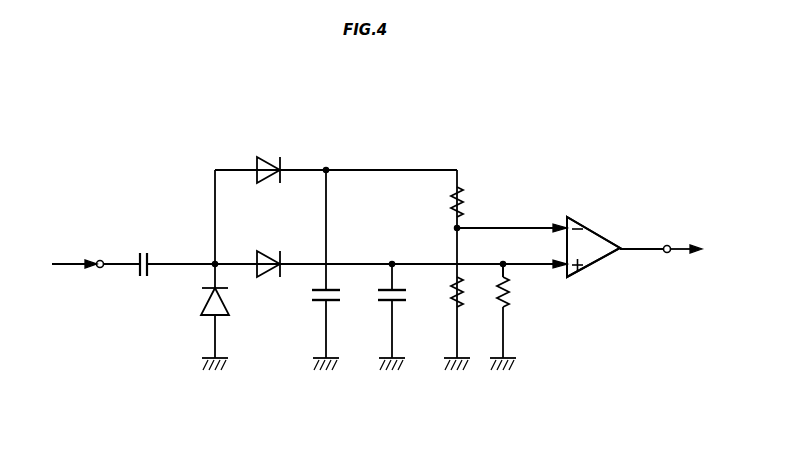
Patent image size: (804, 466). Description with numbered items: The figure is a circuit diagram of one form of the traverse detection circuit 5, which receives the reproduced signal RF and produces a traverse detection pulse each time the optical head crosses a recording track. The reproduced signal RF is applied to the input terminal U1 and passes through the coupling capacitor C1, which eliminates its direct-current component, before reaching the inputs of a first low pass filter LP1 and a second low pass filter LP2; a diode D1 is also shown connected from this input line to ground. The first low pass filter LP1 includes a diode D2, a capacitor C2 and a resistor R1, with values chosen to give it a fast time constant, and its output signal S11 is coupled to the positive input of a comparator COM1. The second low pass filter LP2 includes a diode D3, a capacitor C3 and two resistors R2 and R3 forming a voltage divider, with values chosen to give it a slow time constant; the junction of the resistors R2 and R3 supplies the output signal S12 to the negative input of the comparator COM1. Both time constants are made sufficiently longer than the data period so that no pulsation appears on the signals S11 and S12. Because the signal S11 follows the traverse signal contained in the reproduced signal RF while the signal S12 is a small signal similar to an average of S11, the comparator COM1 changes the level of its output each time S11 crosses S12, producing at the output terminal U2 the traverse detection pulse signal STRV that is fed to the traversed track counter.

The reproduced signal RF is at (68, 267).
The input terminal U1 is at (98, 258).
The coupling capacitor C1 is at (149, 254).
The diode D1 is at (204, 312).
The diode D2 is at (270, 279).
The diode D3 is at (268, 184).
The capacitor C3 is at (316, 301).
The capacitor C2 is at (382, 301).
The resistor R1 is at (510, 292).
The resistor R2 is at (461, 195).
The resistor R3 is at (450, 292).
The first low pass filter LP1 is at (550, 313).
The second low pass filter LP2 is at (443, 160).
The output signal S11 is at (541, 268).
The output signal S12 is at (523, 227).
The comparator COM1 is at (586, 226).
The traverse detection circuit 5 is at (538, 168).
The output terminal U2 is at (666, 255).
The traverse detection pulse signal STRV is at (672, 246).